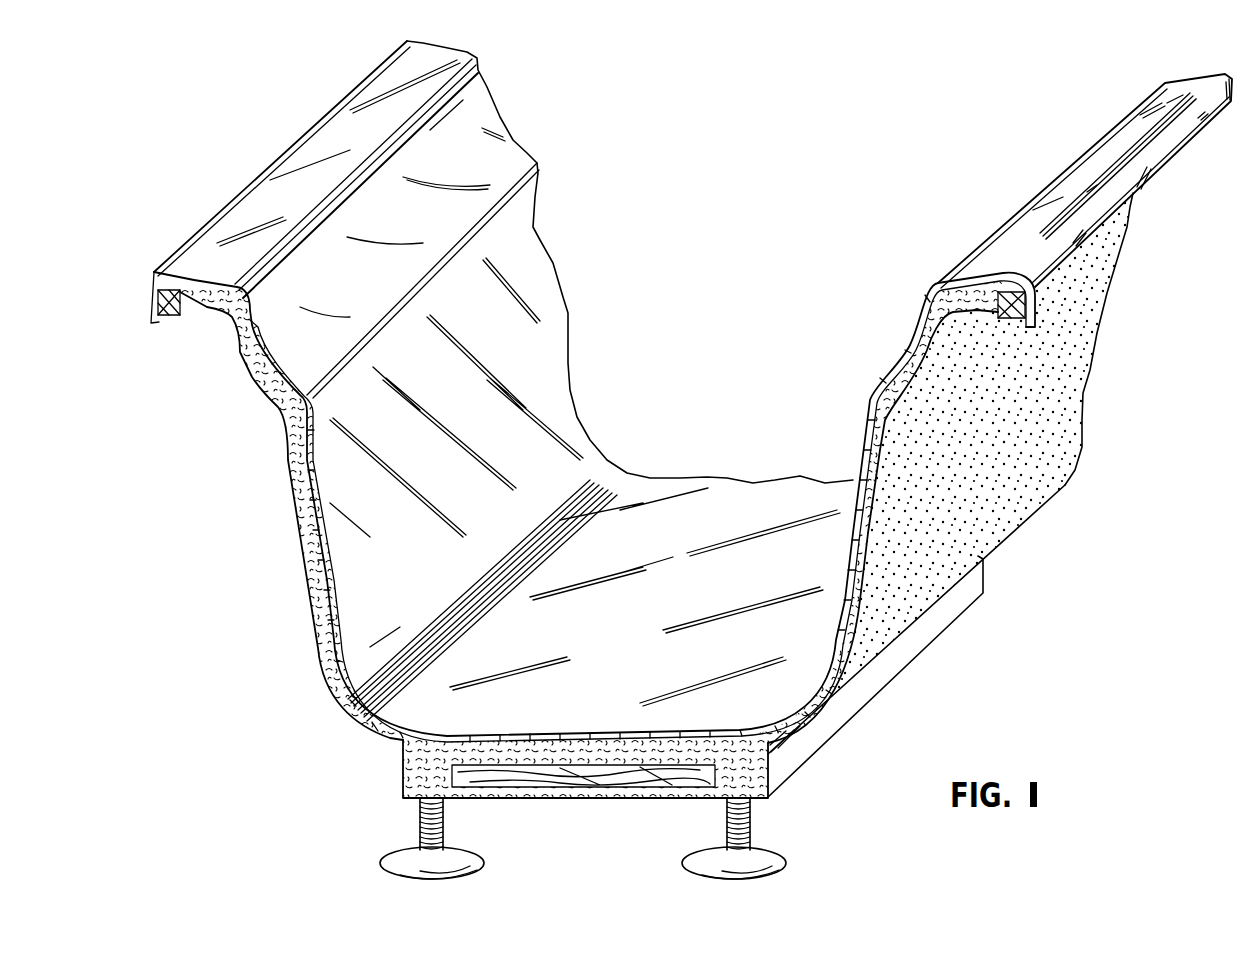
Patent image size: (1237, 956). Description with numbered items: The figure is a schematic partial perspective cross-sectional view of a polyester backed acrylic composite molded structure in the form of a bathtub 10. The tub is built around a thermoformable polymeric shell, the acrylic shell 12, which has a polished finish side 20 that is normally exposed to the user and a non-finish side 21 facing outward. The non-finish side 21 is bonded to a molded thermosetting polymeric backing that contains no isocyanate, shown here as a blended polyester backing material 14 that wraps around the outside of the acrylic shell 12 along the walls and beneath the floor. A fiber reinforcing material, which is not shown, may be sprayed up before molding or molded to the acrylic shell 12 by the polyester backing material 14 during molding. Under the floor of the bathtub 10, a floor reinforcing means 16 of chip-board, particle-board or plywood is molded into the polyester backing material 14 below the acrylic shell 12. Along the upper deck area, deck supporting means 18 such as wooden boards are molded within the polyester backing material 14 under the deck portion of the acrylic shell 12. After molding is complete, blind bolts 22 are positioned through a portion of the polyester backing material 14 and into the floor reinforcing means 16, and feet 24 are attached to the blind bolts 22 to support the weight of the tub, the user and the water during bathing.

The bathtub 10 is at (674, 133).
The acrylic shell 12 is at (848, 534).
The polyester backing material 14 is at (311, 598).
The floor reinforcing means 16 is at (566, 790).
The deck supporting means 18 is at (170, 318).
The polished finish side 20 is at (550, 349).
The non-finish side 21 is at (874, 528).
The blind bolts 22 is at (419, 826).
The feet 24 is at (386, 863).